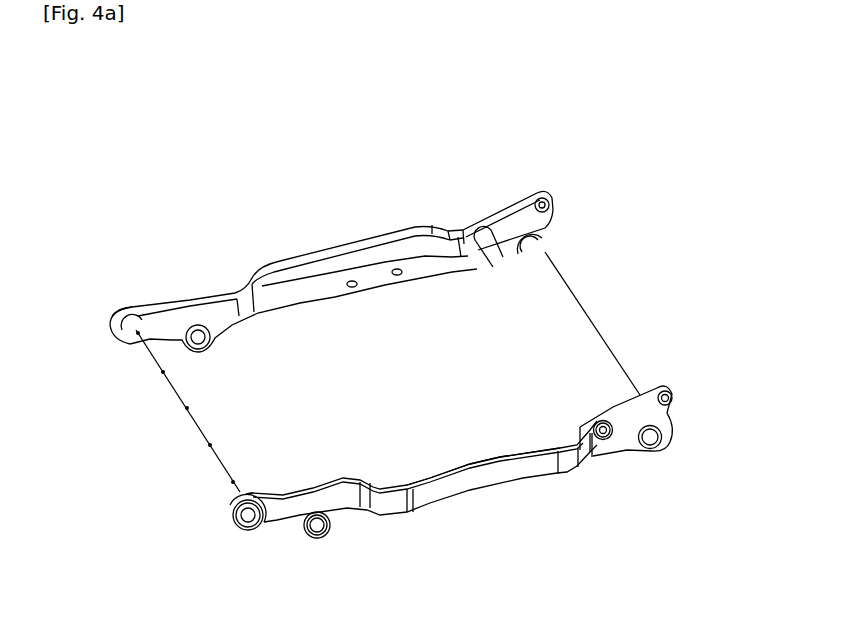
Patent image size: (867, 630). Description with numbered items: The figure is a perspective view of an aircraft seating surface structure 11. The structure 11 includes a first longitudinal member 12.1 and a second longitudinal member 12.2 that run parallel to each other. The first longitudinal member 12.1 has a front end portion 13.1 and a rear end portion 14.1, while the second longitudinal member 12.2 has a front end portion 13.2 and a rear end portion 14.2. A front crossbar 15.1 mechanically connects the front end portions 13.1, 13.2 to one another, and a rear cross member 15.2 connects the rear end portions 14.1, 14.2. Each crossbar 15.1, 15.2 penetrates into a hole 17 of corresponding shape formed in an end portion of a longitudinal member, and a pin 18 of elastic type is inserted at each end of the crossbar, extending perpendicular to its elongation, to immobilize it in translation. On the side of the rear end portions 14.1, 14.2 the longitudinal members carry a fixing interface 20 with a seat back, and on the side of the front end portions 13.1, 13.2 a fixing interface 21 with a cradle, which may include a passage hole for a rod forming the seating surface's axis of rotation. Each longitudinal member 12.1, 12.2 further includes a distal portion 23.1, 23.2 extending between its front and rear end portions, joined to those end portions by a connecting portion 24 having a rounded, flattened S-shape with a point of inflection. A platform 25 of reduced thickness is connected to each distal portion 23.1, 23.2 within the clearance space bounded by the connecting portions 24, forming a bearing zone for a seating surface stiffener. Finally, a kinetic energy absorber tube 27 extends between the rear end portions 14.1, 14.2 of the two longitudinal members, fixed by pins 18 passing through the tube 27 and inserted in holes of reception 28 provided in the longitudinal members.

The seating surface structure 11 is at (425, 346).
The first longitudinal member 12.1 is at (293, 266).
The second longitudinal member 12.2 is at (421, 505).
The front end portion 13.1 is at (161, 282).
The front end portion 13.2 is at (241, 542).
The rear end portion 14.1 is at (508, 173).
The rear end portion 14.2 is at (661, 461).
The front crossbar 15.1 is at (152, 403).
The rear cross member 15.2 is at (596, 254).
The hole 17 is at (199, 518).
The pin 18 is at (426, 445).
The fixing interface 20 is at (660, 245).
The fixing interface 21 is at (304, 560).
The distal portion 23.1 is at (357, 216).
The distal portion 23.2 is at (493, 528).
The connecting portion 24 is at (495, 361).
The platform 25 is at (365, 213).
The kinetic energy absorber tube 27 is at (589, 275).
The hole of reception 28 is at (634, 352).